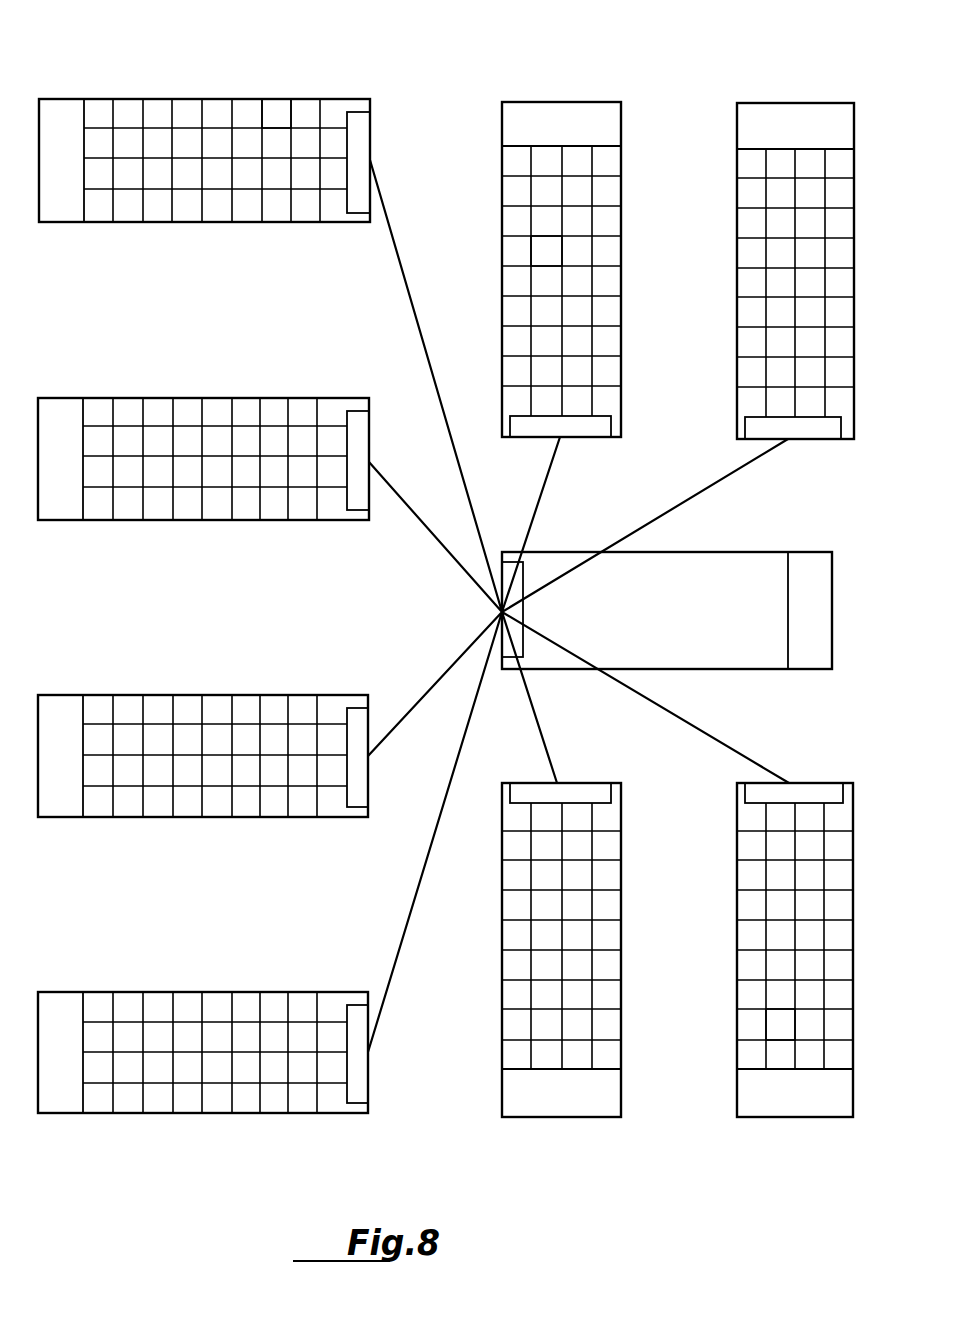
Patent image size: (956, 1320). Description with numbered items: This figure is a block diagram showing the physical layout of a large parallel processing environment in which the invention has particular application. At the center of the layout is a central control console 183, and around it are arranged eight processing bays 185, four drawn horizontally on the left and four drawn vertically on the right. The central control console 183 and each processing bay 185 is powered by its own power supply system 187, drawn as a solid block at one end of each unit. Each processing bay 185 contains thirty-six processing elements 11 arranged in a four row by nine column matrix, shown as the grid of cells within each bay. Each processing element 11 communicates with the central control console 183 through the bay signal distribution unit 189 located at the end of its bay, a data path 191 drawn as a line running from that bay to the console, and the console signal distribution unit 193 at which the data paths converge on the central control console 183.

The processing element 11 is at (273, 108).
The central control console 183 is at (742, 670).
The processing bay 185 is at (150, 99).
The power supply system 187 is at (58, 98).
The bay signal distribution unit 189 is at (362, 137).
The data path 191 is at (395, 238).
The console signal distribution unit 193 is at (520, 575).